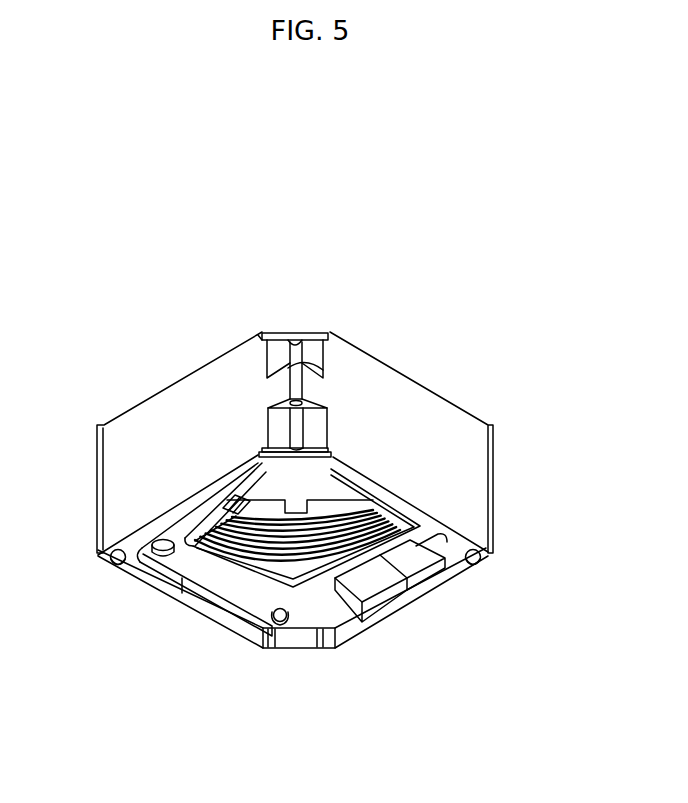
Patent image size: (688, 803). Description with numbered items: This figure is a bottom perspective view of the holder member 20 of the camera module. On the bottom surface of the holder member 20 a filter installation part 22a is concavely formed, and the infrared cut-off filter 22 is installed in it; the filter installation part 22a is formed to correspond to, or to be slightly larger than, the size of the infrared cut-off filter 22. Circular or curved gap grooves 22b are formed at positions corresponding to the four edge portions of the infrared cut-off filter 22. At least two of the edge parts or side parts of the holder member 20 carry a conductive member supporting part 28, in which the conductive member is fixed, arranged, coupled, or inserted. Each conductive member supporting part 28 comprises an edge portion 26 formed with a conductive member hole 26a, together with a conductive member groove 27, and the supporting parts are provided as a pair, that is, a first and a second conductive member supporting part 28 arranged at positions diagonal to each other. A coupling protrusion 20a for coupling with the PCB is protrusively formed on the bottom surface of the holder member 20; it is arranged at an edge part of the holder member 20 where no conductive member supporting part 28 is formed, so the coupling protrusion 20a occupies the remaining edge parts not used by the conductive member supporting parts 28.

The holder member 20 is at (85, 259).
The coupling protrusion 20a is at (488, 560).
The infrared cut-off filter 22 is at (345, 608).
The filter installation part 22a is at (322, 584).
The gap groove 22b is at (281, 621).
The edge portion 26 is at (331, 359).
The conductive member hole 26a is at (347, 356).
The conductive member groove 27 is at (298, 353).
The conductive member supporting part 28 is at (364, 336).